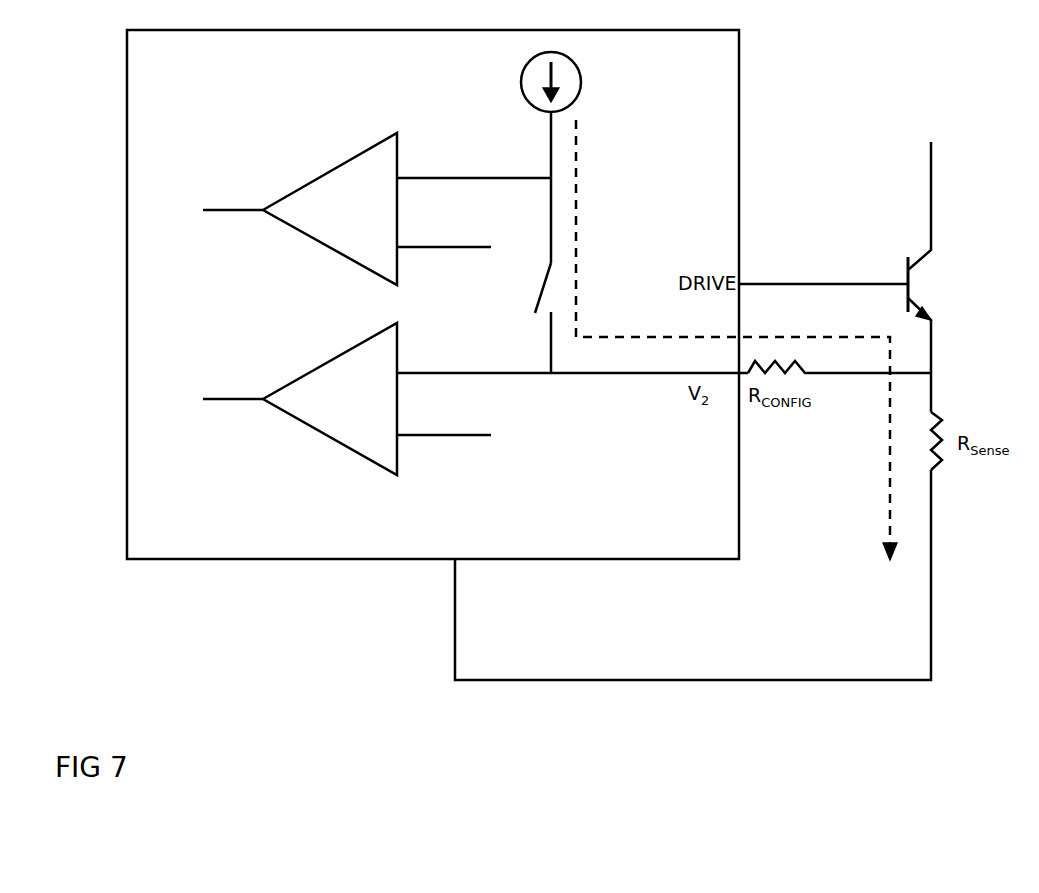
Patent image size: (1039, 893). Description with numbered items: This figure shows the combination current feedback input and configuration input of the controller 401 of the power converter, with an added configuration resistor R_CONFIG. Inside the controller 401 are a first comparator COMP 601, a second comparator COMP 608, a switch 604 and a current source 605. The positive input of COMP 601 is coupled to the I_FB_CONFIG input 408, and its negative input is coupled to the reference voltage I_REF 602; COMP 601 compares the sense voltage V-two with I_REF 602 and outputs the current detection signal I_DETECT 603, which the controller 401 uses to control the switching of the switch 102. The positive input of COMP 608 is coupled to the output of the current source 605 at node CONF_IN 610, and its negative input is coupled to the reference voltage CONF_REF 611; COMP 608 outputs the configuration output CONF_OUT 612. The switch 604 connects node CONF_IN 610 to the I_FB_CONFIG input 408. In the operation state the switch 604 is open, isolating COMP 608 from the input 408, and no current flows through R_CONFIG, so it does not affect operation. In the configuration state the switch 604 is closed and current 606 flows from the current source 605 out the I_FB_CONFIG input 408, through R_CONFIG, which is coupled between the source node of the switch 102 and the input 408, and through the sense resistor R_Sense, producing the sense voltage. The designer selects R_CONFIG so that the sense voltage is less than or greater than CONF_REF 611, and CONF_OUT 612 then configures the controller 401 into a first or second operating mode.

The controller 401 is at (433, 294).
The configuration output CONF_OUT 612 is at (213, 198).
The second comparator COMP 608 is at (330, 209).
The node CONF_IN 610 is at (474, 163).
The reference voltage CONF_REF 611 is at (462, 233).
The current source 605 is at (574, 115).
The switch 604 is at (520, 275).
The I_FB_CONFIG input 408 is at (572, 389).
The current detection signal I_DETECT 603 is at (221, 384).
The first comparator COMP 601 is at (330, 399).
The reference voltage I_REF 602 is at (444, 453).
The switch 102 is at (943, 277).
The current 606 is at (736, 340).